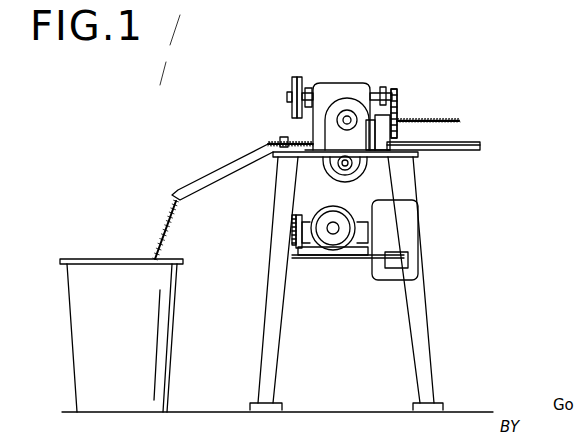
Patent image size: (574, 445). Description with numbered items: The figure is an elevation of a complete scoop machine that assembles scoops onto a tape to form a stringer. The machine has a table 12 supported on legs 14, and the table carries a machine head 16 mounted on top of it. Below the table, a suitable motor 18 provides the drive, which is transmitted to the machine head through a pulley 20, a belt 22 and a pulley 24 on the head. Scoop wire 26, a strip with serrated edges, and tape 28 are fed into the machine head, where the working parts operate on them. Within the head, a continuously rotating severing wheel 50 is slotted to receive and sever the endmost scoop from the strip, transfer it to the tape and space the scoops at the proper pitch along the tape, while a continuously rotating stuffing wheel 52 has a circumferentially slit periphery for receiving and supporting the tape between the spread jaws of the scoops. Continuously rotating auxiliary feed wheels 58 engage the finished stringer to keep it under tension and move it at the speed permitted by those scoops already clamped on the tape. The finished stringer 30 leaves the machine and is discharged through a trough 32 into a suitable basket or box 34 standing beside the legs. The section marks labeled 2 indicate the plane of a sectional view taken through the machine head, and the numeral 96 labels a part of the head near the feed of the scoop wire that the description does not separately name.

The section line 2- 2 is at (345, 38).
The table 12 is at (418, 156).
The legs 14 is at (420, 340).
The machine head 16 is at (368, 86).
The motor 18 is at (337, 246).
The pulley 20 is at (296, 248).
The belt 22 is at (297, 139).
The pulley 24 is at (290, 93).
The scoop wire 26 is at (446, 119).
The tape 28 is at (484, 146).
The finished stringer 30 is at (161, 229).
The trough 32 is at (218, 180).
The basket or box 34 is at (69, 325).
The severing wheel 50 is at (336, 104).
The stuffing wheel 52 is at (341, 179).
The auxiliary feed wheels 58 is at (281, 139).
The gear 96 is at (394, 84).